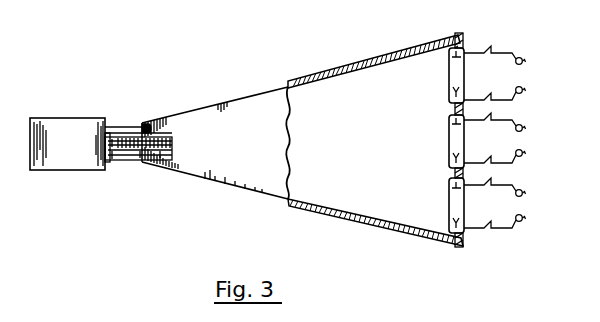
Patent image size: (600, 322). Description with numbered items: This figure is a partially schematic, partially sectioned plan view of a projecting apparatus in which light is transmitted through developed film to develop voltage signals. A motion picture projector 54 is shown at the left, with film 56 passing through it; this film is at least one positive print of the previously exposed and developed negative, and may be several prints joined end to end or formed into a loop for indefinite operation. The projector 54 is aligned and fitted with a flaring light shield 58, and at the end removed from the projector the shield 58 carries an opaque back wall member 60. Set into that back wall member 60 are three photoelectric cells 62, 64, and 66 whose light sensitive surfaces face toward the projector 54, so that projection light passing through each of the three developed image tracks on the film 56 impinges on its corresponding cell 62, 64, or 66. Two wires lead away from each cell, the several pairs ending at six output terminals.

The motion picture projector 54 is at (67, 119).
The film 56 is at (138, 142).
The light shield 58 is at (306, 81).
The opaque back wall member 60 is at (462, 38).
The photoelectric cell 62 is at (447, 73).
The photoelectric cell 64 is at (447, 133).
The photoelectric cell 66 is at (447, 195).